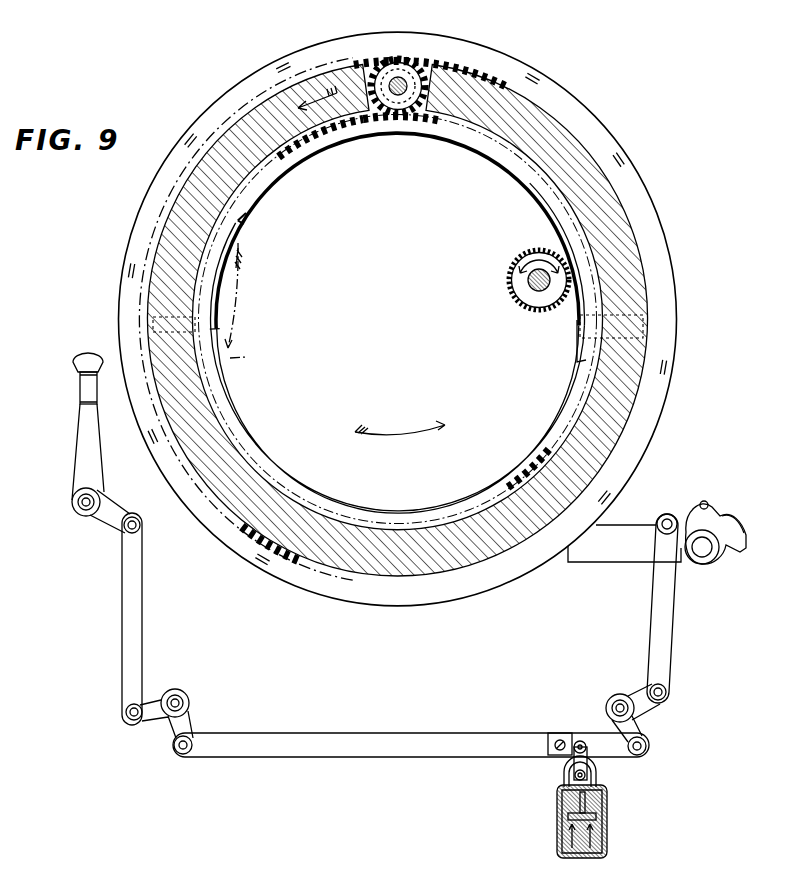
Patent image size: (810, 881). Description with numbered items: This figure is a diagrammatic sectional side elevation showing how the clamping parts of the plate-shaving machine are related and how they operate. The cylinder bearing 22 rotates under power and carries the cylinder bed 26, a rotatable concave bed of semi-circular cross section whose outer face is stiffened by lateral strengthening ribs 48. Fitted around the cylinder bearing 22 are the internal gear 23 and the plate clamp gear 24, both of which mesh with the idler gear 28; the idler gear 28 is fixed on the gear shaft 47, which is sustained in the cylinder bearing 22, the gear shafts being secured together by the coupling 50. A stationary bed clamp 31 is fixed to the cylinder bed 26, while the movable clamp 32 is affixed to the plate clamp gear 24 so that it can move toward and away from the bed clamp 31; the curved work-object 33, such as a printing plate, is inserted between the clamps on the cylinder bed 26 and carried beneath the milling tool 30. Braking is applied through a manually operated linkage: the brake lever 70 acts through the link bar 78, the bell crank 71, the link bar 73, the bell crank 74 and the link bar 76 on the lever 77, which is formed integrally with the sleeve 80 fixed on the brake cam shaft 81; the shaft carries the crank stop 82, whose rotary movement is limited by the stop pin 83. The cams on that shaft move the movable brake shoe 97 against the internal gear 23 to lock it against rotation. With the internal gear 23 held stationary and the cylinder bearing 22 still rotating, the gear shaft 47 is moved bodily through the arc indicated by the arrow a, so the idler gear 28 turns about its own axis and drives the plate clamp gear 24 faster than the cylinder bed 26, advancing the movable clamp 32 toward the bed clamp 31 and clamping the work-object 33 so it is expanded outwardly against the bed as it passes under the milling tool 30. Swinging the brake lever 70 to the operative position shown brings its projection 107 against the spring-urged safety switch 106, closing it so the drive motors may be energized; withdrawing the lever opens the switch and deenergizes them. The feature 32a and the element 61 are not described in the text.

The cylinder bearing 22 is at (612, 233).
The internal gear 23 is at (266, 82).
The plate clamp gear 24 is at (347, 125).
The cylinder bed 26 is at (438, 555).
The idler gear 28 is at (468, 62).
The milling tool 30 is at (520, 288).
The bed clamp 31 is at (576, 322).
The movable clamp 32 is at (243, 224).
The shoulder of inner ring 32a is at (258, 205).
The work-object 33 is at (285, 465).
The gear shaft 47 is at (455, 112).
The lateral strengthening ribs 48 is at (335, 597).
The coupling 50 is at (380, 120).
The pinion shaft 61 is at (531, 296).
The brake lever 70 is at (87, 433).
The bell crank 71 is at (170, 730).
The link bar 73 is at (283, 733).
The bell crank 74 is at (648, 704).
The link bar 76 is at (660, 633).
The lever 77 is at (680, 530).
The link bar 78 is at (142, 605).
The sleeve 80 is at (700, 562).
The brake cam shaft 81 is at (708, 552).
The crank stop 82 is at (718, 527).
The stop pin 83 is at (706, 502).
The movable brake shoe 97 is at (606, 552).
The safety switch 106 is at (557, 820).
The projection 107 is at (553, 733).
The arrow a is at (314, 108).